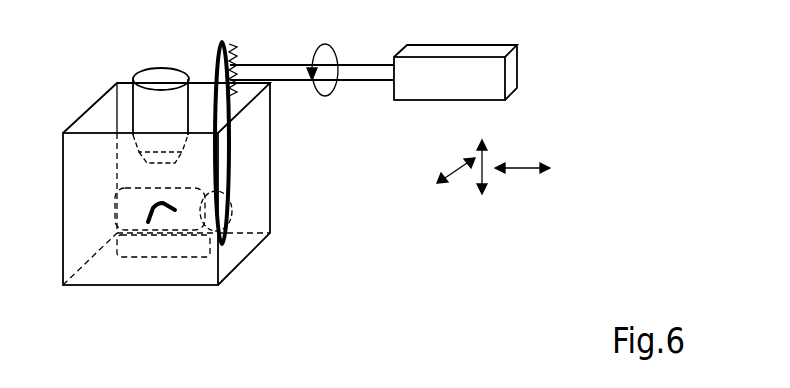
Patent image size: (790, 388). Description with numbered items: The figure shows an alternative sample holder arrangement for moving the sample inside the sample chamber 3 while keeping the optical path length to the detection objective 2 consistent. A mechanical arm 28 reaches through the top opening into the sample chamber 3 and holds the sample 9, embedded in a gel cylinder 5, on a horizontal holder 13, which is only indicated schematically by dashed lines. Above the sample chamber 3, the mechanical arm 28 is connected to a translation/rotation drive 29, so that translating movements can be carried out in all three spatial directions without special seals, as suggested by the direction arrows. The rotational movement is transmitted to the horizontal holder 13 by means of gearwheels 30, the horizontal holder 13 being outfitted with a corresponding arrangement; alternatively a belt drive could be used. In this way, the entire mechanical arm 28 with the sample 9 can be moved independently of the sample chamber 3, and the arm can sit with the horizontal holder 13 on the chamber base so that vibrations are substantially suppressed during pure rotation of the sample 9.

The detection objective 2 is at (138, 73).
The sample chamber 3 is at (238, 245).
The gel cylinder 5 is at (128, 213).
The sample 9 is at (150, 222).
The horizontal holder 13 is at (177, 250).
The mechanical arm 28 is at (296, 79).
The translation/rotation drive 29 is at (413, 95).
The gearwheel 30 is at (234, 84).